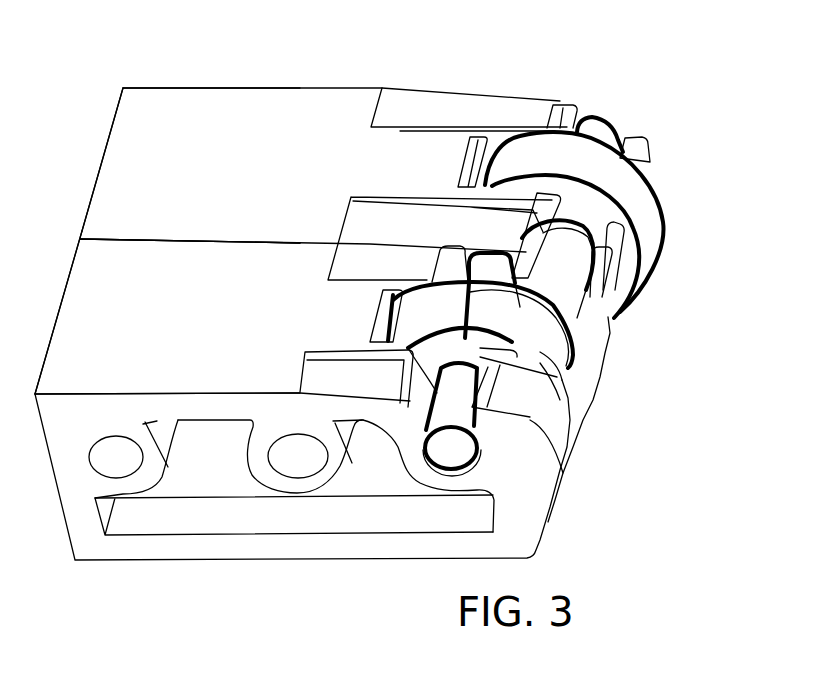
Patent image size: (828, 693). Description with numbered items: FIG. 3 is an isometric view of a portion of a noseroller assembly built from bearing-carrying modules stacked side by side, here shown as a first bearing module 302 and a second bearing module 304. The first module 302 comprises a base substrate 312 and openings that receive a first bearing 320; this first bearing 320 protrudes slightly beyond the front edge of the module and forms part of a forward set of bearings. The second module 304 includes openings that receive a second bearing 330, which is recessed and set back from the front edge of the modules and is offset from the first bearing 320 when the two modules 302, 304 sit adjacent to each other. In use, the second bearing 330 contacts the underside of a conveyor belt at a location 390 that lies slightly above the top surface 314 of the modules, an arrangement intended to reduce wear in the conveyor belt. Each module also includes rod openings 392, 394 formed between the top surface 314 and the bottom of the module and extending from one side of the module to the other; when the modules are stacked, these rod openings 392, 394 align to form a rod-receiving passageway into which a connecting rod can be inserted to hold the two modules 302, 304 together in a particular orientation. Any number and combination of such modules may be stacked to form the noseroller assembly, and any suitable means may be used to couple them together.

The first bearing module 302 is at (316, 112).
The second bearing module 304 is at (567, 517).
The base substrate 312 is at (220, 188).
The top surface 314 is at (185, 332).
The first bearing 320 is at (665, 223).
The second bearing 330 is at (577, 355).
The contact location 390 is at (393, 300).
The rod opening 392 is at (118, 463).
The rod opening 394 is at (297, 460).